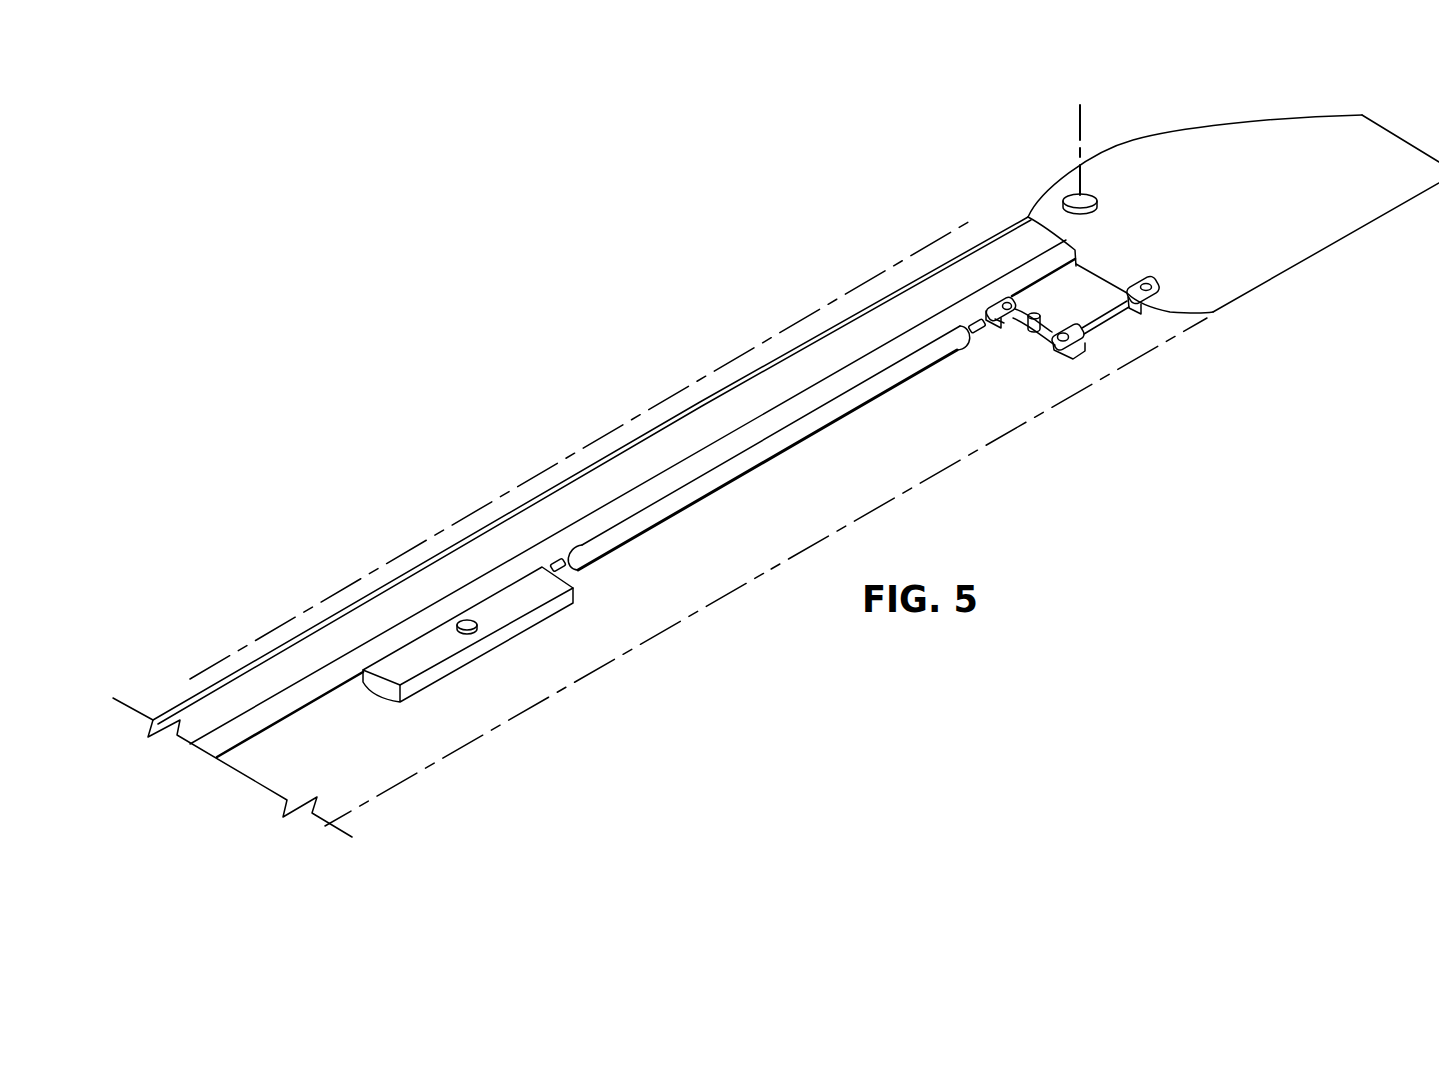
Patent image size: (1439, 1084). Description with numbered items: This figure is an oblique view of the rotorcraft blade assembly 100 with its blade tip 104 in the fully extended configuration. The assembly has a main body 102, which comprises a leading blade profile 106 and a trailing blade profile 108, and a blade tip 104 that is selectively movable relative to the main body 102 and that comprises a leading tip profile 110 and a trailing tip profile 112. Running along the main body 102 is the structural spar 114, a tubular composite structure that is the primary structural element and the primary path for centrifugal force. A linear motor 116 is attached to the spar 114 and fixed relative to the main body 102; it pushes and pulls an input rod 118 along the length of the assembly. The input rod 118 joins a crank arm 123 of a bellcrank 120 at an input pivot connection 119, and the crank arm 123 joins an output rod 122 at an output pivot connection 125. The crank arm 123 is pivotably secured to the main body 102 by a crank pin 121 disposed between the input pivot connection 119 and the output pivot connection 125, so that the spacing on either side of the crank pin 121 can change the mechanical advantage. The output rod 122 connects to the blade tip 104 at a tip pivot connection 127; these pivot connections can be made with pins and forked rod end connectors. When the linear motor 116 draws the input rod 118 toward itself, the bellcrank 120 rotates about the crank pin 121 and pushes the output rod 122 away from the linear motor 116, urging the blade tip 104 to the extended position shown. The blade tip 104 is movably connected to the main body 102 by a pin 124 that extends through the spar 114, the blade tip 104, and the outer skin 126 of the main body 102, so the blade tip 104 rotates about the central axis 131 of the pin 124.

The rotorcraft blade assembly 100 is at (678, 272).
The main body 102 is at (576, 450).
The blade tip 104 is at (1385, 111).
The leading blade profile 106 is at (822, 305).
The trailing blade profile 108 is at (650, 633).
The leading tip profile 110 is at (1207, 130).
The trailing tip profile 112 is at (1340, 242).
The structural spar 114 is at (446, 538).
The linear motor 116 is at (490, 655).
The input rod 118 is at (766, 459).
The input pivot connection 119 is at (989, 293).
The bellcrank 120 is at (1048, 359).
The crank pin 121 is at (1018, 330).
The output rod 122 is at (1107, 323).
The crank arm 123 is at (1045, 315).
The pin 124 is at (1098, 193).
The output pivot connection 125 is at (1088, 367).
The outer skin 126 is at (890, 483).
The tip pivot connection 127 is at (1156, 322).
The central axis 131 is at (1077, 118).